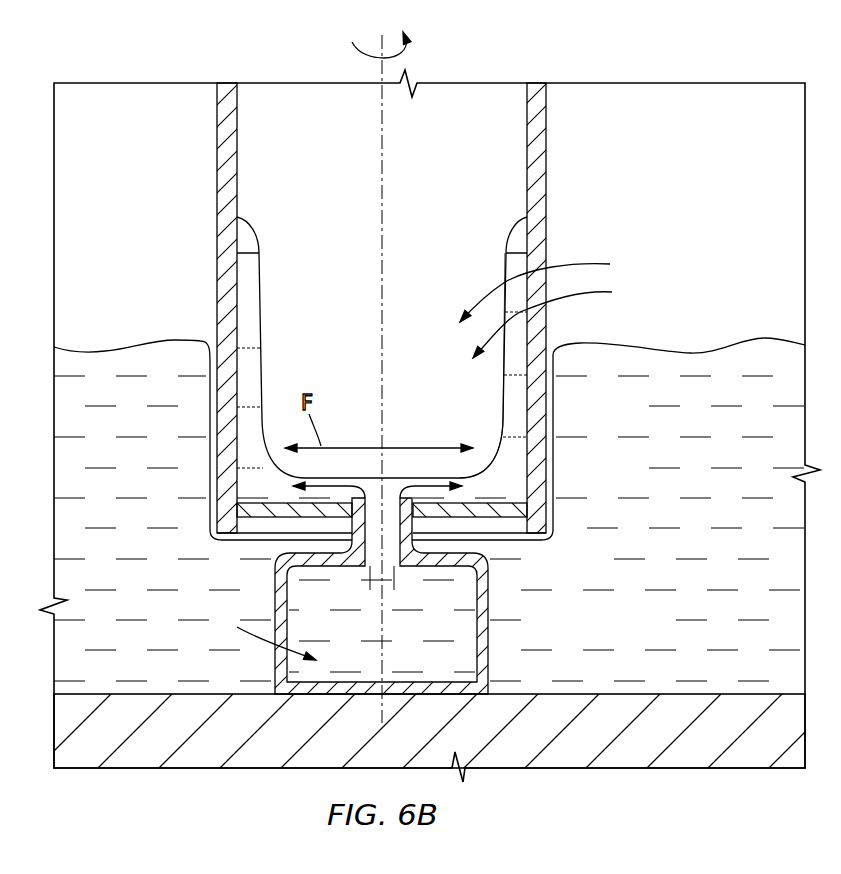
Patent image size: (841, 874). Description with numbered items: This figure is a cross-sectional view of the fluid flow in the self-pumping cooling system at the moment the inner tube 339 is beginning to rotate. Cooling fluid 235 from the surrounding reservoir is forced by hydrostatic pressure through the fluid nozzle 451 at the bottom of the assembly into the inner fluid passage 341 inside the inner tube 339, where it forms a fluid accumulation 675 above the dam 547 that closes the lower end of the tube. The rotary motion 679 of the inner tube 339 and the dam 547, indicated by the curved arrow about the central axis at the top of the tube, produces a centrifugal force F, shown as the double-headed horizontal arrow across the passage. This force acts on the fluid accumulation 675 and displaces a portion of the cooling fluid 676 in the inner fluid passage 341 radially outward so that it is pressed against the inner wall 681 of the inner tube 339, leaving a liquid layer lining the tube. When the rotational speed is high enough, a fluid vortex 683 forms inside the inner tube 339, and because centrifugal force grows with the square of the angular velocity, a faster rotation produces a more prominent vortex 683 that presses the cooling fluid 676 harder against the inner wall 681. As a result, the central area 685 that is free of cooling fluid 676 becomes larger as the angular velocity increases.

The cooling fluid 235 is at (605, 629).
The inner tube 339 is at (537, 231).
The inner fluid passage 341 is at (455, 214).
The dam 547 is at (523, 509).
The inner wall 681 is at (528, 395).
The cooling fluid 676 is at (518, 426).
The fluid accumulation 675 is at (510, 458).
The central area 685 is at (556, 285).
The fluid vortex 683 is at (562, 315).
The fluid nozzle 451 is at (492, 570).
The rotary motion 679 is at (410, 52).